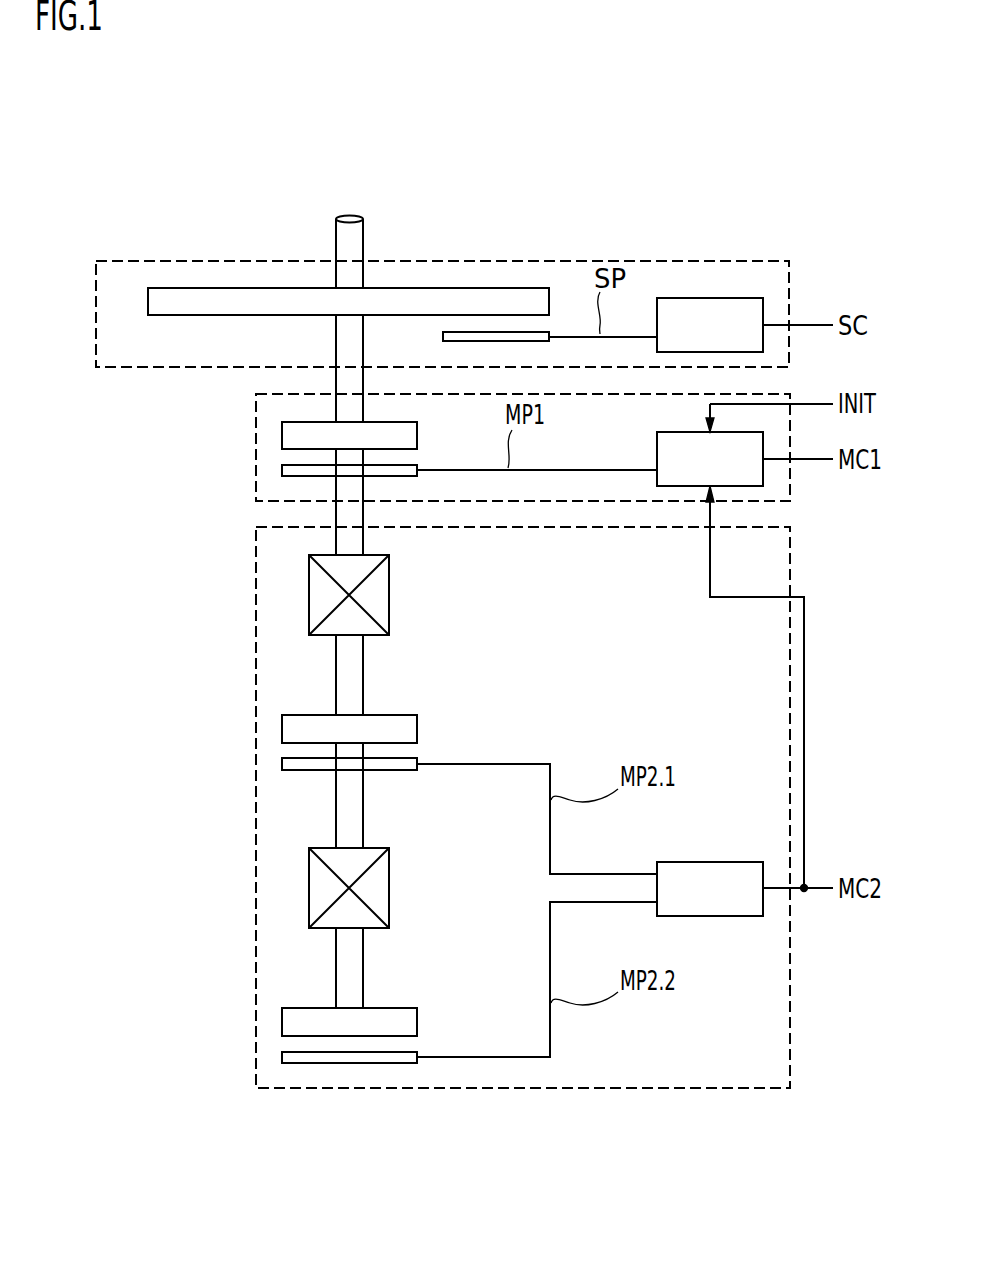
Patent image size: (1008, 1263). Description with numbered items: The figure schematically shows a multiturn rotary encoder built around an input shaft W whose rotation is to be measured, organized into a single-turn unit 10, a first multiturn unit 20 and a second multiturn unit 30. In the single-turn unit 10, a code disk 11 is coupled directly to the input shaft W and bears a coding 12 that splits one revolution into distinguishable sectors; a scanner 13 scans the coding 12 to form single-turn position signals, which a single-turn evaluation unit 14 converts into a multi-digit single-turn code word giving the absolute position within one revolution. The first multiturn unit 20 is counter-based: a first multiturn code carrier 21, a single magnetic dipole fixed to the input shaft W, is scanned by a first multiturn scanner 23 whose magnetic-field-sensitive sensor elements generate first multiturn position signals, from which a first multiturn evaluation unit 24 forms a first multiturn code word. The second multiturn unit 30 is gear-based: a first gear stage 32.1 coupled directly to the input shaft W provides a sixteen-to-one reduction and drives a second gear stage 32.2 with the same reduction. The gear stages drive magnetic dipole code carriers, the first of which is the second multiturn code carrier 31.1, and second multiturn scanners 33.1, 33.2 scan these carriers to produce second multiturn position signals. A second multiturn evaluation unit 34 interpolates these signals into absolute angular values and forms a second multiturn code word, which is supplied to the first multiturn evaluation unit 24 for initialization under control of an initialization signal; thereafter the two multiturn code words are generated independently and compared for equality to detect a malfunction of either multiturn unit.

The single-turn unit 10 is at (145, 260).
The code disk 11 is at (210, 302).
The coding 12 is at (496, 261).
The scanner 13 is at (445, 336).
The single-turn evaluation unit 14 is at (710, 316).
The first multiturn unit 20 is at (256, 490).
The first multiturn code carrier 21 is at (282, 432).
The first multiturn scanner 23 is at (398, 471).
The first multiturn evaluation unit 24 is at (665, 457).
The second multiturn unit 30 is at (256, 796).
The second multiturn code carrier 31.1 is at (282, 727).
The first gear stage 32.1 is at (320, 600).
The second gear stage 32.2 is at (320, 888).
The second multiturn scanner 33.1 is at (405, 764).
The second multiturn scanner 33.2 is at (406, 1060).
The second multiturn evaluation unit 34 is at (726, 882).
The input shaft W is at (352, 235).